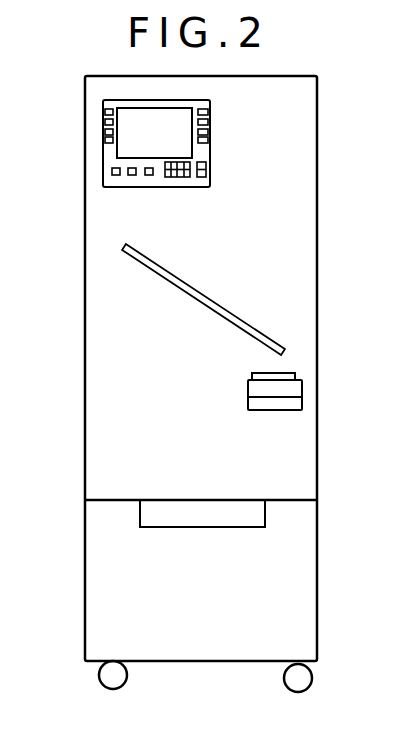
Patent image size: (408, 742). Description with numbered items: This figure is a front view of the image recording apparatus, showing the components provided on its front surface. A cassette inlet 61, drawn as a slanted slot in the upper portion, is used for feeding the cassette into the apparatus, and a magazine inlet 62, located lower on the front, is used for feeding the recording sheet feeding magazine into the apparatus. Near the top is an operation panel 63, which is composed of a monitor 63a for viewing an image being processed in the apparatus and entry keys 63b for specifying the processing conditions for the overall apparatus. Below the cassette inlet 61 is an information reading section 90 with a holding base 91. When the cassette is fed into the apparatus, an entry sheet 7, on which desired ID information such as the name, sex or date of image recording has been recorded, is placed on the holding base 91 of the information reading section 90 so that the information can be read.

The entry sheet 7 is at (292, 373).
The cassette inlet 61 is at (243, 318).
The magazine inlet 62 is at (233, 513).
The operation panel 63 is at (158, 138).
The monitor 63a is at (173, 125).
The entry keys 63b is at (208, 170).
The information reading section 90 is at (309, 387).
The holding base 91 is at (247, 383).